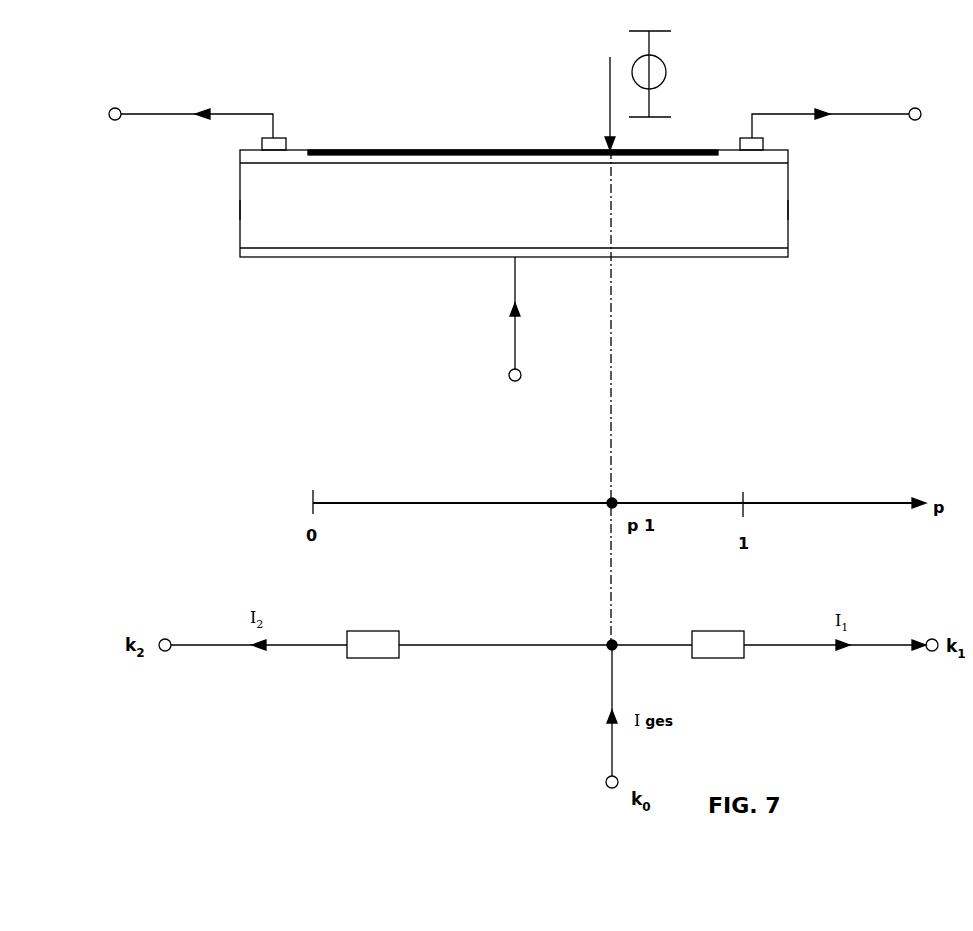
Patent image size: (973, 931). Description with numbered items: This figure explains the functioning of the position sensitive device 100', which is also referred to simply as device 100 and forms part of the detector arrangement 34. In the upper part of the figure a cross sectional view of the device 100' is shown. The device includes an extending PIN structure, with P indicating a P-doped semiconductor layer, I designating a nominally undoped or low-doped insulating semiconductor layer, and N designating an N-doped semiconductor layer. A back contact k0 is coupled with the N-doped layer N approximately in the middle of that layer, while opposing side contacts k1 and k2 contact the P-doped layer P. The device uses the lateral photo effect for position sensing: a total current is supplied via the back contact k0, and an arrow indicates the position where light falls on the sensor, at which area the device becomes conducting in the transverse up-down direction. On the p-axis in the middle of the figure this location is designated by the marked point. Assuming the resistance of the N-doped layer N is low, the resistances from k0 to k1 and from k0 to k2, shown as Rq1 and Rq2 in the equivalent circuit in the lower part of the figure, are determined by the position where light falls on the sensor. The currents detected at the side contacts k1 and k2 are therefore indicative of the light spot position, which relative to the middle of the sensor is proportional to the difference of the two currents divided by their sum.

The position sensitive device 100' is at (545, 177).
The position-sensitive photodetector (PIN diode) 100 is at (545, 177).
The detector arrangement 34 is at (520, 222).
The P-doped semiconductor layer P is at (788, 163).
The nominally undoped or low-doped semiconductor layer I is at (788, 210).
The N-doped semiconductor layer N is at (788, 257).
The back contact k0 is at (461, 335).
The side contact k1 is at (852, 112).
The side contact k2 is at (180, 109).
The resistance from k0 to k1 Rq1 is at (718, 633).
The resistance from k0 to k2 Rq2 is at (373, 633).